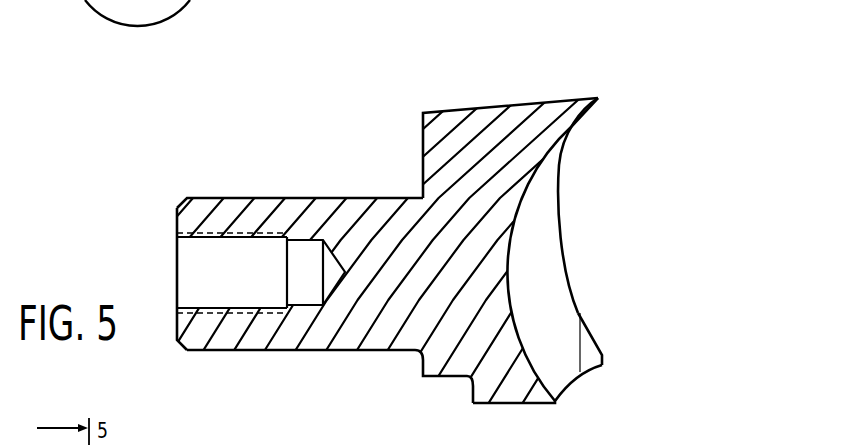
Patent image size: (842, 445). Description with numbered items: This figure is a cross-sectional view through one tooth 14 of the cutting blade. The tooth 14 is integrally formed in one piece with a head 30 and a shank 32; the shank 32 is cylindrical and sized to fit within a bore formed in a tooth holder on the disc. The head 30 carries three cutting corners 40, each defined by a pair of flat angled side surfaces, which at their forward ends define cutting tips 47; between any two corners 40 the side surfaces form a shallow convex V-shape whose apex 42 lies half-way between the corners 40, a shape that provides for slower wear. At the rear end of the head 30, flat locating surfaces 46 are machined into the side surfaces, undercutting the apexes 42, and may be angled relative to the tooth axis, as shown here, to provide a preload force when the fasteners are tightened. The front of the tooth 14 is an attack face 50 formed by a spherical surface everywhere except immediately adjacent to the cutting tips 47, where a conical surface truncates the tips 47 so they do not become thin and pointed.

The tooth 14 is at (364, 72).
The head 30 is at (493, 107).
The shank 32 is at (262, 200).
The cutting corner 40 is at (547, 102).
The apex 42 is at (558, 399).
The flat locating surface 46 is at (438, 378).
The cutting tip 47 is at (600, 102).
The attack face 50 is at (540, 254).